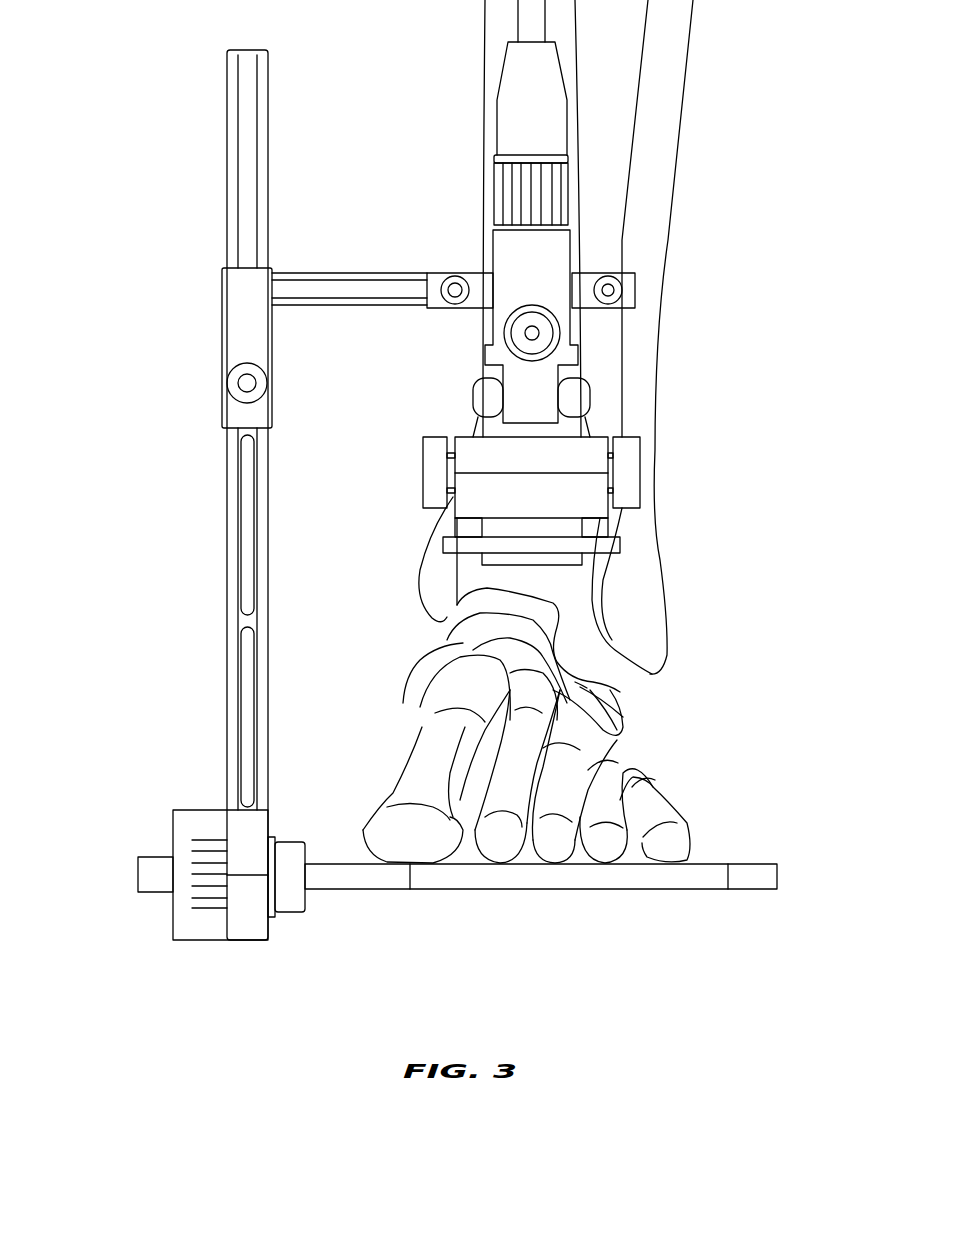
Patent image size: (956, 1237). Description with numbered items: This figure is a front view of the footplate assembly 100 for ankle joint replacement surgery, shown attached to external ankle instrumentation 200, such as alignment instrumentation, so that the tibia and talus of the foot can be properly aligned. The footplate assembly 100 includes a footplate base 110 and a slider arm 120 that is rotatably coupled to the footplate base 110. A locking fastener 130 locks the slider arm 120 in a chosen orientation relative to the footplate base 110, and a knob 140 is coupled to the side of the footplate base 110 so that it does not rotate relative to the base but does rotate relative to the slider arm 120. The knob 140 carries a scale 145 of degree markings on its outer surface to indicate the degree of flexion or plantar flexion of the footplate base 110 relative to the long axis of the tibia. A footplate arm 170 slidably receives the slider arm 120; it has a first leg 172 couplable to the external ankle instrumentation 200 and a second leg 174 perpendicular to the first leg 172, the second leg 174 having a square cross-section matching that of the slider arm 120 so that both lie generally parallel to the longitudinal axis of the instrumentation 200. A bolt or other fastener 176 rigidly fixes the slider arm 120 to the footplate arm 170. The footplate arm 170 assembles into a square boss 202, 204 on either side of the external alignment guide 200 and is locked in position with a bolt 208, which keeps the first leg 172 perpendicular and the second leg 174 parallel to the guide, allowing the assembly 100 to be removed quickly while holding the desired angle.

The footplate assembly 100 is at (435, 491).
The footplate base 110 is at (560, 876).
The slider arm 120 is at (227, 594).
The locking fastener 130 is at (155, 857).
The knob 140 is at (208, 810).
The scale 145 is at (210, 898).
The footplate arm 170 is at (498, 298).
The first leg 172 is at (352, 273).
The second leg 174 is at (222, 322).
The fastener 176 is at (227, 383).
The external ankle instrumentation 200 is at (510, 211).
The square boss 202 is at (477, 300).
The square boss 204 is at (636, 291).
The bolt 208 is at (455, 273).